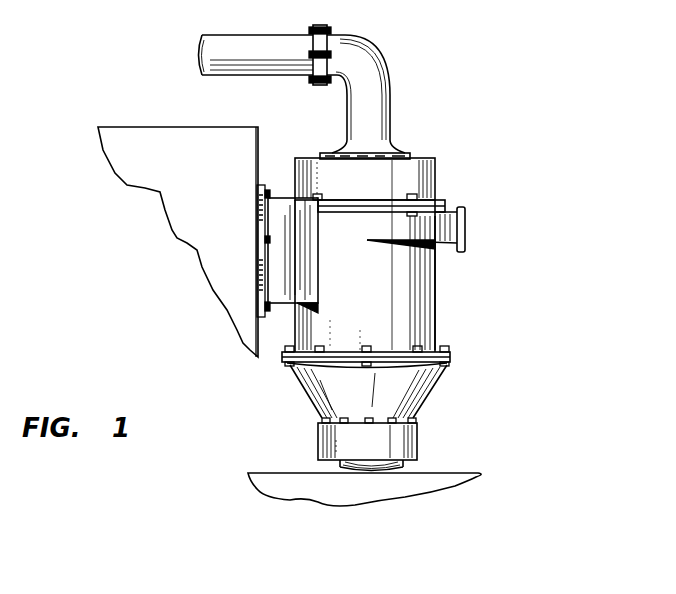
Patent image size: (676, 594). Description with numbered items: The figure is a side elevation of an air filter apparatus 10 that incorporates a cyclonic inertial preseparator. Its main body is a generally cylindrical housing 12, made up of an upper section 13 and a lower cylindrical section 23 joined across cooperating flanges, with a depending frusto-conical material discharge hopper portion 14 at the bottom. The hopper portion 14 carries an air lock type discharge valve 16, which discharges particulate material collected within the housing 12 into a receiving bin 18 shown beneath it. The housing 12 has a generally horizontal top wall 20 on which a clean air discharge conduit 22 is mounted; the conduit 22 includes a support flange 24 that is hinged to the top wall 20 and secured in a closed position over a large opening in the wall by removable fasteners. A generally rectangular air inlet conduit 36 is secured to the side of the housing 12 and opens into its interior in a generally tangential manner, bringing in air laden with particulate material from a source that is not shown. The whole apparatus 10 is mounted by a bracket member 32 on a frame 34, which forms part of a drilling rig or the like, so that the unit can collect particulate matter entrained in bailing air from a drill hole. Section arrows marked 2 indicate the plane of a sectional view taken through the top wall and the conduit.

The air filter apparatus 10 is at (482, 155).
The housing 12 is at (450, 323).
The upper section 13 is at (450, 174).
The material discharge hopper portion 14 is at (413, 400).
The discharge valve 16 is at (417, 433).
The receiving bin 18 is at (465, 485).
The top wall 20 is at (425, 157).
The clean air discharge conduit 22 is at (372, 56).
The lower cylindrical section 23 is at (436, 296).
The support flange 24 is at (330, 150).
The bracket member 32 is at (310, 263).
The frame 34 is at (177, 238).
The air inlet conduit 36 is at (381, 238).
The section line 2- 2 is at (418, 97).